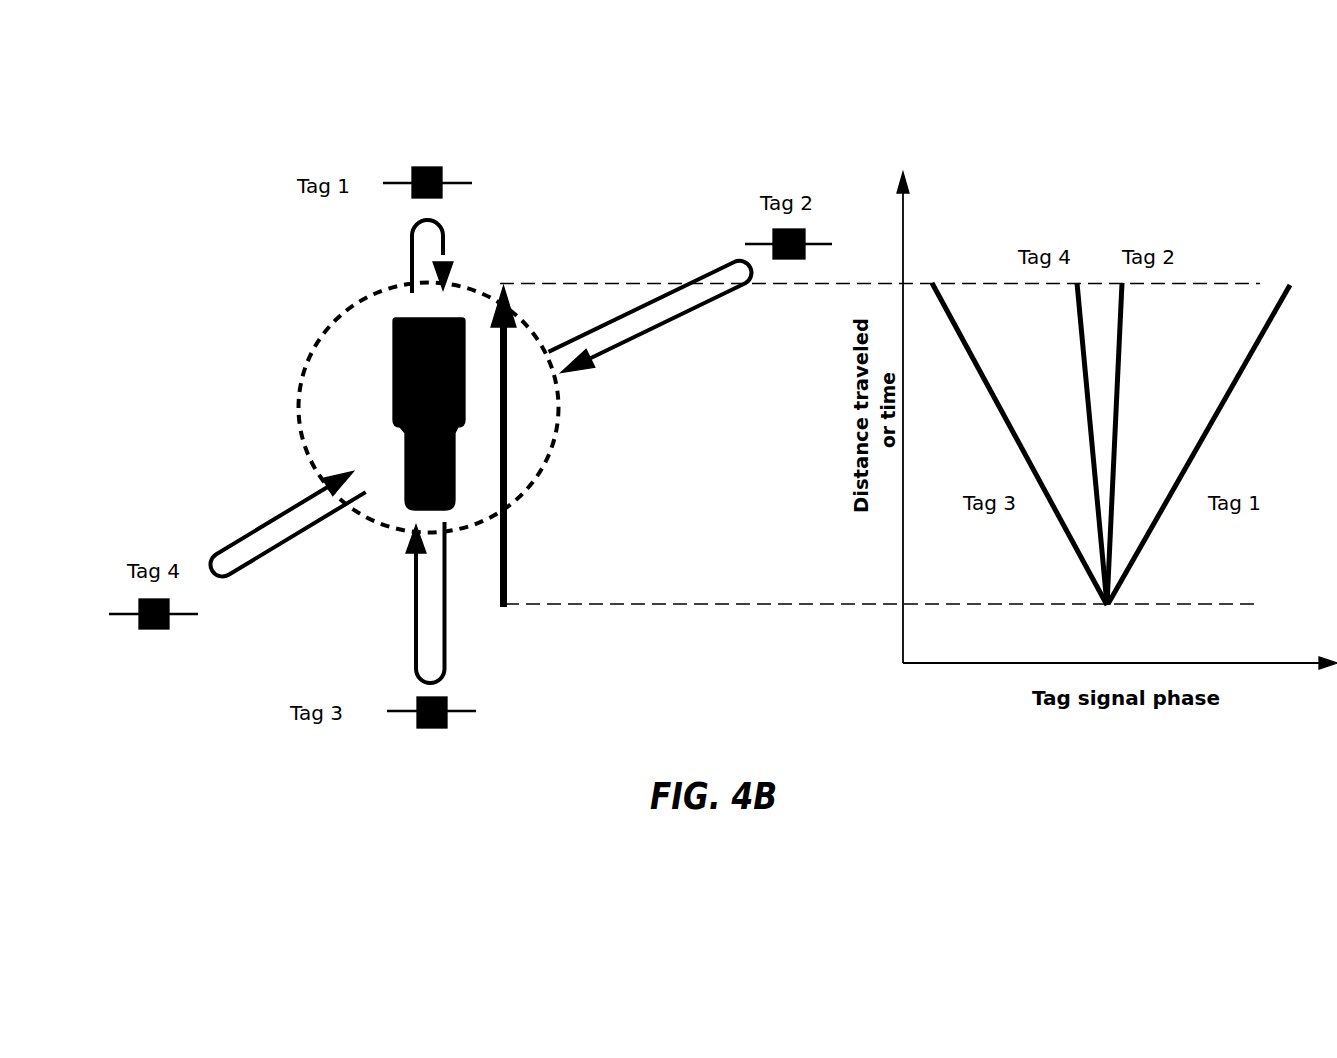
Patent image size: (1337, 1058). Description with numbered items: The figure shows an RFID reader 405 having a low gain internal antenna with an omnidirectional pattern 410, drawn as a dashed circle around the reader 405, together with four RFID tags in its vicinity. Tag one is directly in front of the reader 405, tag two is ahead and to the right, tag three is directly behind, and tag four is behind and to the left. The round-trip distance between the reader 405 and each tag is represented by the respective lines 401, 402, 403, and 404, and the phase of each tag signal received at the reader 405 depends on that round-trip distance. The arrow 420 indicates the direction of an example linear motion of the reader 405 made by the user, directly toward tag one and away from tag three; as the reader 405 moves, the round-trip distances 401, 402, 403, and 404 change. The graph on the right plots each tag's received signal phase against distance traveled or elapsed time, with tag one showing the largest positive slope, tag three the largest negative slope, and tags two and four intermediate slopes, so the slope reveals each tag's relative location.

The round-trip distance line for tag 1 401 is at (445, 257).
The round-trip distance line for tag 2 402 is at (623, 312).
The round-trip distance line for tag 3 403 is at (447, 617).
The round-trip distance line for tag 4 404 is at (282, 512).
The RFID reader 405 is at (397, 326).
The omnidirectional pattern 410 is at (300, 373).
The arrow indicating direction of reader motion 420 is at (505, 547).